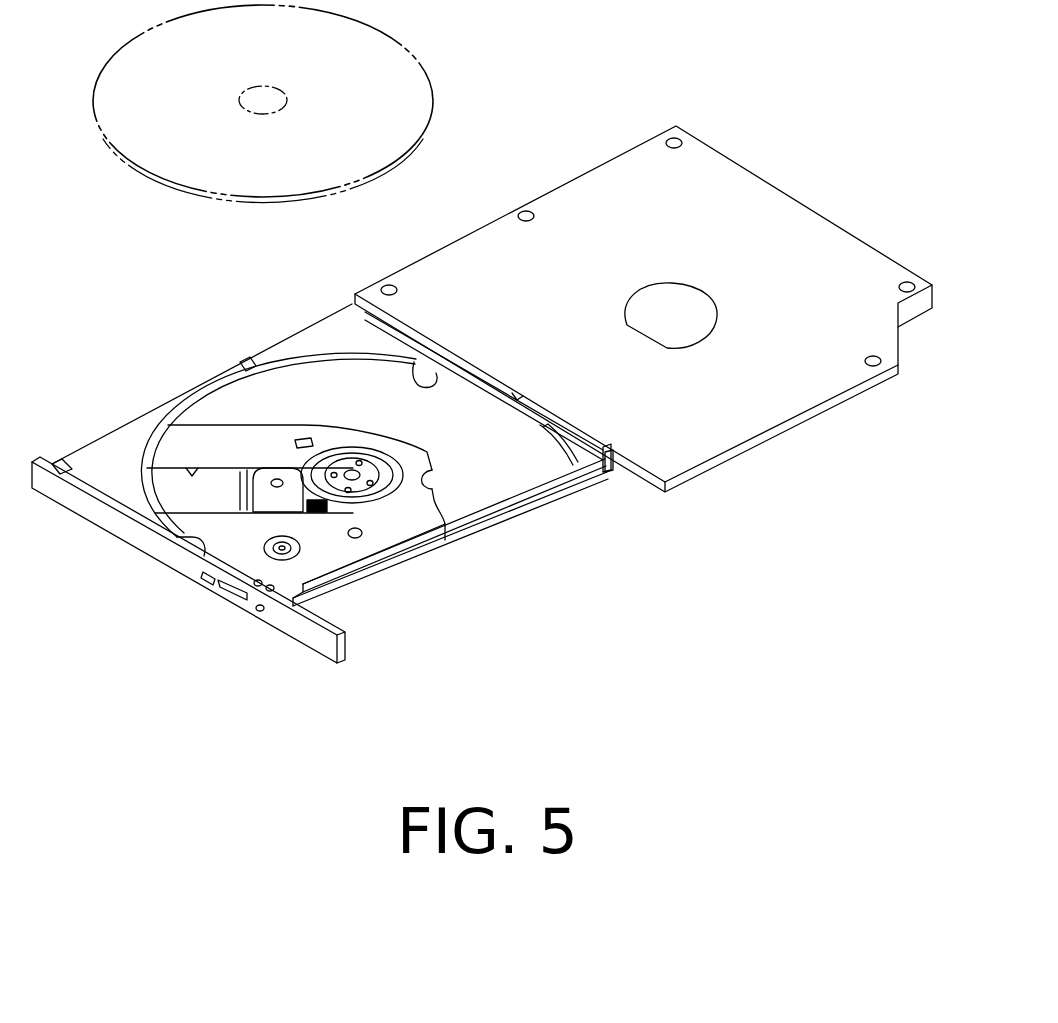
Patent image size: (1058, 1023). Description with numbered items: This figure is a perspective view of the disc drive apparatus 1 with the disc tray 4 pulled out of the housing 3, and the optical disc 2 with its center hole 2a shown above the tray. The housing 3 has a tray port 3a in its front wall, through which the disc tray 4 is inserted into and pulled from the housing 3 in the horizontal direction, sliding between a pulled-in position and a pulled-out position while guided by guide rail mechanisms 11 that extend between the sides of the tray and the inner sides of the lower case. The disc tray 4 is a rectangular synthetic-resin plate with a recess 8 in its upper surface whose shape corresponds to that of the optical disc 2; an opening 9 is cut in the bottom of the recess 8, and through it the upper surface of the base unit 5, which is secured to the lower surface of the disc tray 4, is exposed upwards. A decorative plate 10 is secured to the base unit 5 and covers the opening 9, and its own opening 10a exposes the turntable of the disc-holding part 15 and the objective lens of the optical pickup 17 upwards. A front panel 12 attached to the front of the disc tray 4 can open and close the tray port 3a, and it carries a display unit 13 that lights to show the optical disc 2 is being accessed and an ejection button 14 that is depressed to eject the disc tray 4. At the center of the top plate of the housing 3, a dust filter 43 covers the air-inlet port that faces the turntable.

The disc drive apparatus 1 is at (112, 351).
The optical disc 2 is at (412, 56).
The center hole 2a is at (279, 98).
The housing 3 is at (737, 206).
The tray port 3a is at (527, 395).
The disc tray 4 is at (107, 457).
The base unit 5 is at (315, 395).
The recess 8 is at (436, 380).
The opening 9 is at (437, 493).
The decorative plate 10 is at (378, 523).
The opening 10a is at (202, 470).
The guide rail mechanisms 11 is at (443, 543).
The front panel 12 is at (142, 537).
The display unit 13 is at (205, 582).
The ejection button 14 is at (228, 590).
The disc-holding part 15 is at (338, 452).
The optical pickup 17 is at (263, 490).
The dust filter 43 is at (722, 313).